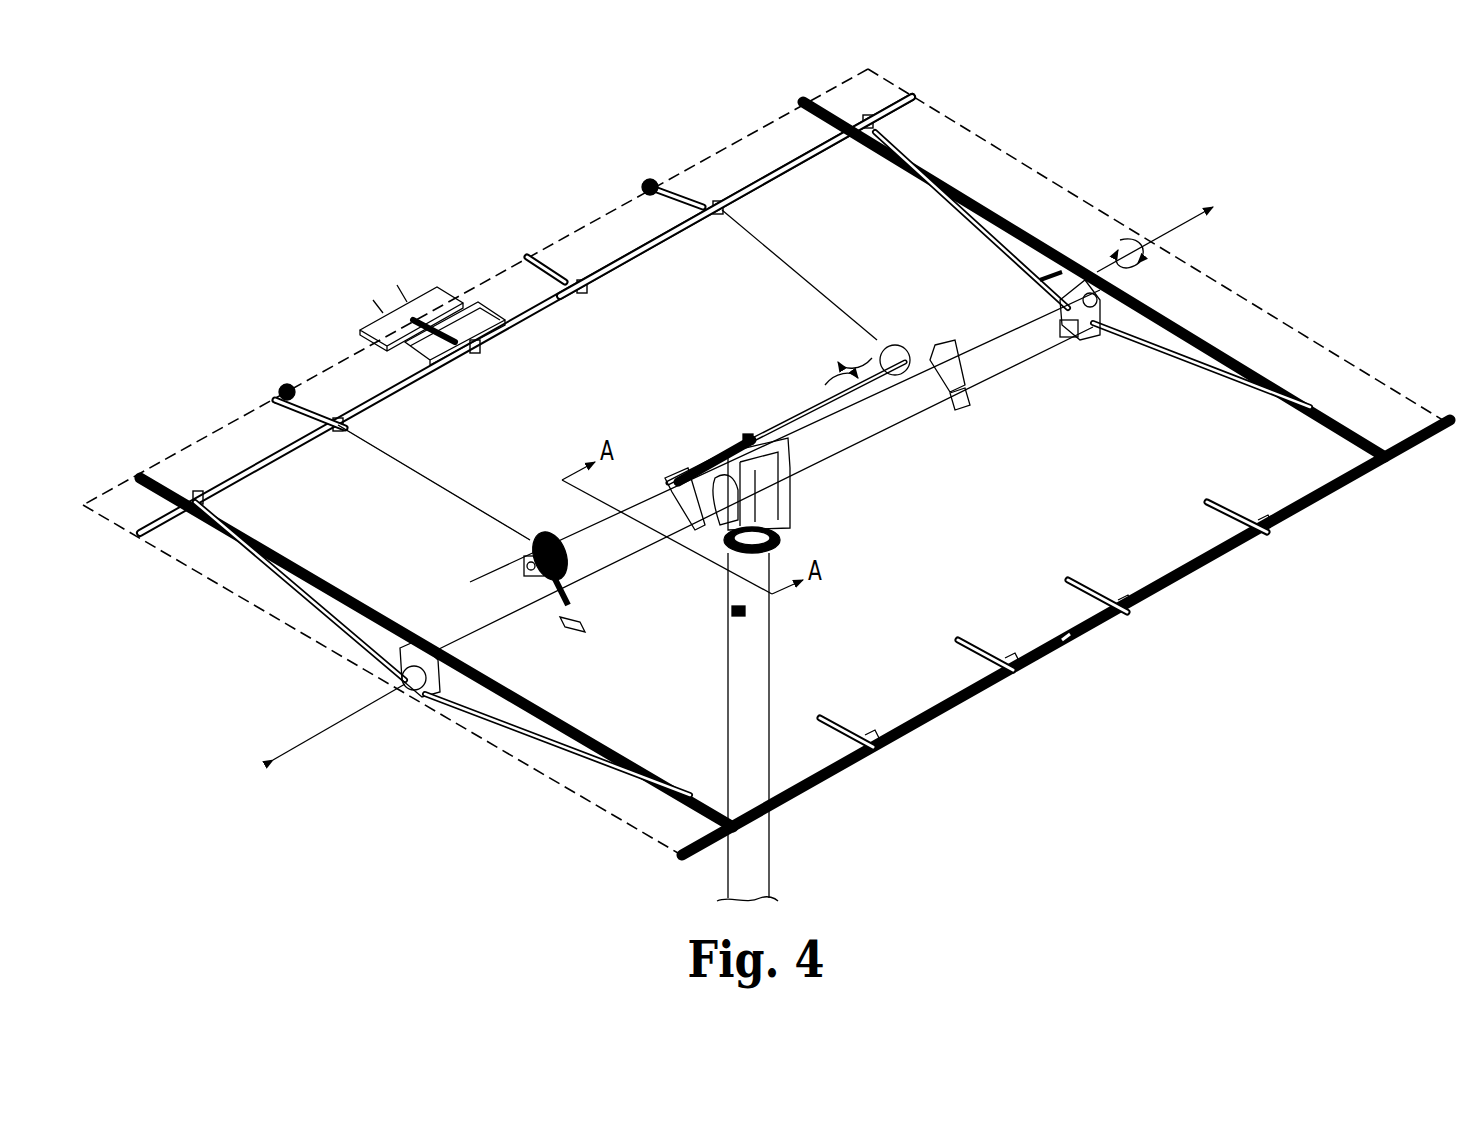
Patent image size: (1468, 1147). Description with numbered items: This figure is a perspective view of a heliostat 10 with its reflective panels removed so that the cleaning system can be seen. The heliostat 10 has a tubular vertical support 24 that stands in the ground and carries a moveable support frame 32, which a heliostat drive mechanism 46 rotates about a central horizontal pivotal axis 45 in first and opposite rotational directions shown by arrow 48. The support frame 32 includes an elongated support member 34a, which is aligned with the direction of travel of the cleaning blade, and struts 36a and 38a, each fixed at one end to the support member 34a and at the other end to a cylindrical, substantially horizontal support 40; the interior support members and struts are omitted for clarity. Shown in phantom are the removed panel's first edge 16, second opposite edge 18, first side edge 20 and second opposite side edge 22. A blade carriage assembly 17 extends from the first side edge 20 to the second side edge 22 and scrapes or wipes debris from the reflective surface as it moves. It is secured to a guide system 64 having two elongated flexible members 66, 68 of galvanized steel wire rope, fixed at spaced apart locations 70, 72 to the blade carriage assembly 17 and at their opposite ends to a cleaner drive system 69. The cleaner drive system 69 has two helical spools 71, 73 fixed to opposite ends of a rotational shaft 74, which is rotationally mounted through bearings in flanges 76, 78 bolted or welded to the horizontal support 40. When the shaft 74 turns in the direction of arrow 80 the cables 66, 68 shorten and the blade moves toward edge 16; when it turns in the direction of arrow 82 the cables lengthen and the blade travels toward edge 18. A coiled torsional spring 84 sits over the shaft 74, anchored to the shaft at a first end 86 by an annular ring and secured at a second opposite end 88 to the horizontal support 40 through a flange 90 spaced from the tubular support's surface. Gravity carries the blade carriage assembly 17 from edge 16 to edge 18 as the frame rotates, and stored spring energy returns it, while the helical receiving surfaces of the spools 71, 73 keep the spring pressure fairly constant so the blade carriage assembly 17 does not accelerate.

The heliostat 10 is at (1042, 746).
The first edge 16 is at (490, 287).
The blade carriage assembly 17 is at (750, 177).
The second opposite edge 18 is at (1193, 572).
The first side edge 20 is at (207, 582).
The second opposite side edge 22 is at (1022, 160).
The vertical support 24 is at (760, 850).
The moveable support frame 32 is at (1100, 300).
The elongated support member 34a is at (338, 583).
The strut 36a is at (337, 640).
The strut 38a is at (543, 752).
The horizontal support 40 is at (1004, 350).
The pivotal axis 45 is at (1153, 237).
The heliostat drive mechanism 46 is at (780, 495).
The arrow 48 is at (1133, 267).
The guide system 64 is at (763, 287).
The elongated flexible member 66 is at (488, 510).
The elongated flexible member 68 is at (787, 280).
The cleaner drive system 69 is at (630, 490).
The spaced apart location 70 is at (340, 417).
The helical spool 71 is at (527, 548).
The spaced apart location 72 is at (700, 198).
The helical spool 73 is at (895, 342).
The rotational shaft 74 is at (800, 432).
The flange 76 is at (575, 593).
The flange 78 is at (965, 380).
The arrow 80 is at (868, 400).
The arrow 82 is at (883, 345).
The torsional spring 84 is at (704, 458).
The first end 86 is at (752, 432).
The second opposite end 88 is at (668, 478).
The flange 90 is at (725, 500).